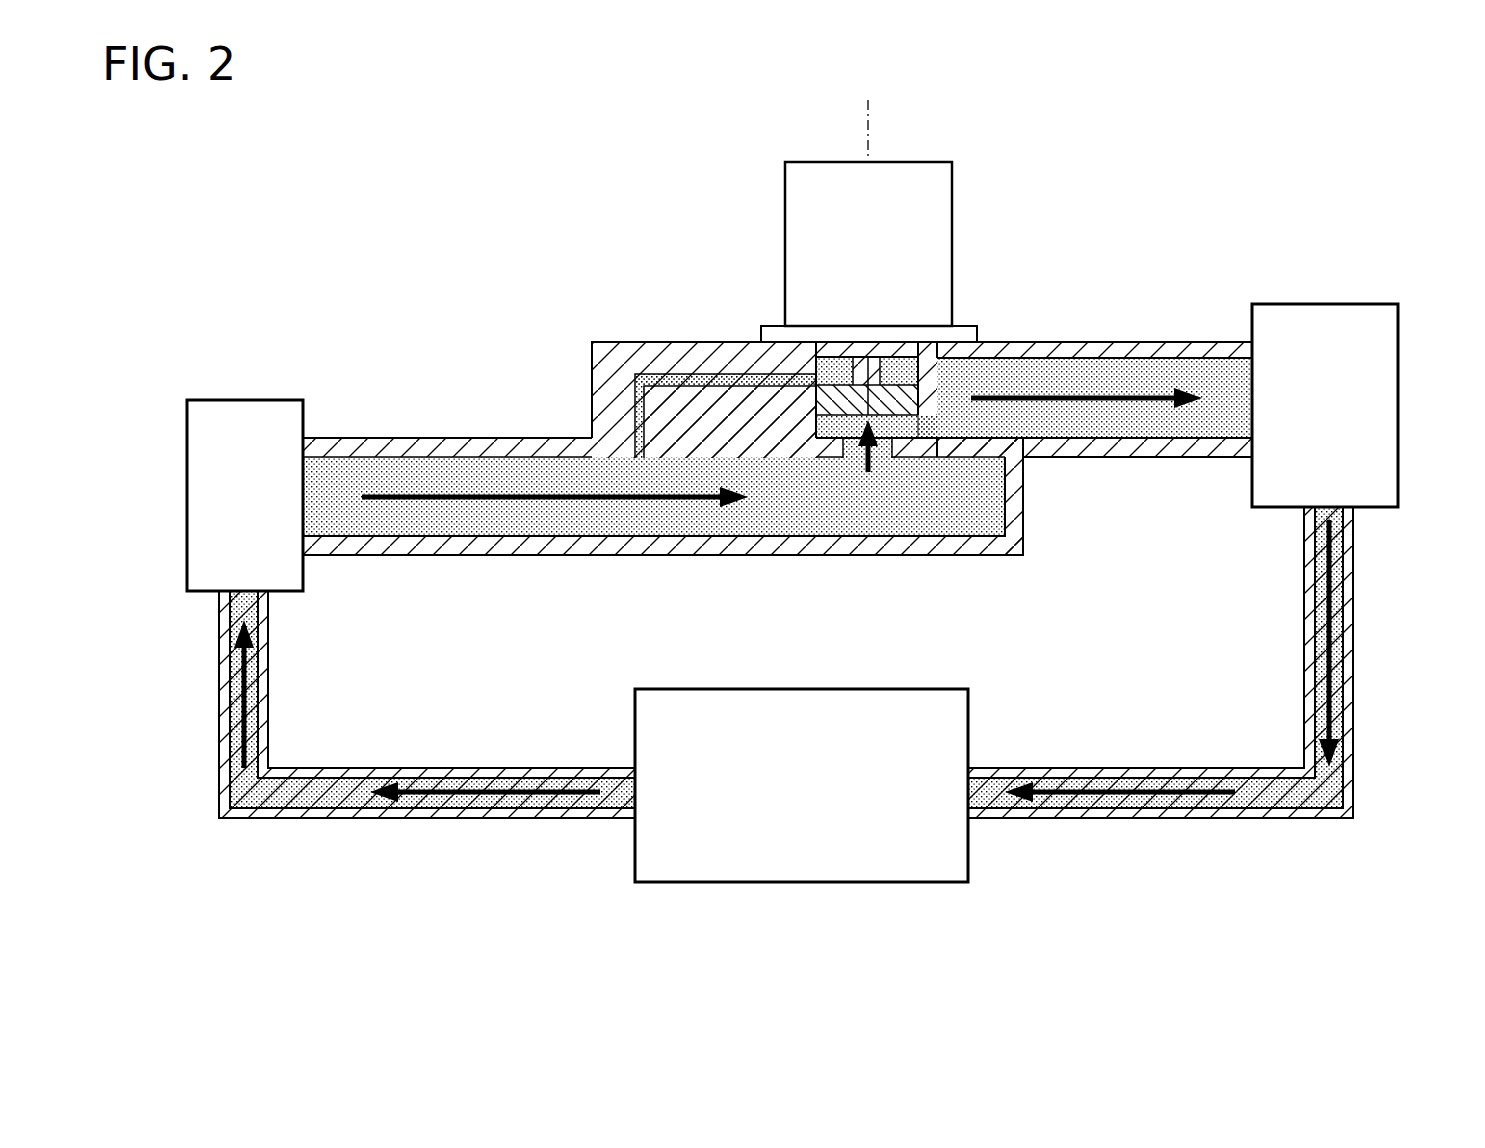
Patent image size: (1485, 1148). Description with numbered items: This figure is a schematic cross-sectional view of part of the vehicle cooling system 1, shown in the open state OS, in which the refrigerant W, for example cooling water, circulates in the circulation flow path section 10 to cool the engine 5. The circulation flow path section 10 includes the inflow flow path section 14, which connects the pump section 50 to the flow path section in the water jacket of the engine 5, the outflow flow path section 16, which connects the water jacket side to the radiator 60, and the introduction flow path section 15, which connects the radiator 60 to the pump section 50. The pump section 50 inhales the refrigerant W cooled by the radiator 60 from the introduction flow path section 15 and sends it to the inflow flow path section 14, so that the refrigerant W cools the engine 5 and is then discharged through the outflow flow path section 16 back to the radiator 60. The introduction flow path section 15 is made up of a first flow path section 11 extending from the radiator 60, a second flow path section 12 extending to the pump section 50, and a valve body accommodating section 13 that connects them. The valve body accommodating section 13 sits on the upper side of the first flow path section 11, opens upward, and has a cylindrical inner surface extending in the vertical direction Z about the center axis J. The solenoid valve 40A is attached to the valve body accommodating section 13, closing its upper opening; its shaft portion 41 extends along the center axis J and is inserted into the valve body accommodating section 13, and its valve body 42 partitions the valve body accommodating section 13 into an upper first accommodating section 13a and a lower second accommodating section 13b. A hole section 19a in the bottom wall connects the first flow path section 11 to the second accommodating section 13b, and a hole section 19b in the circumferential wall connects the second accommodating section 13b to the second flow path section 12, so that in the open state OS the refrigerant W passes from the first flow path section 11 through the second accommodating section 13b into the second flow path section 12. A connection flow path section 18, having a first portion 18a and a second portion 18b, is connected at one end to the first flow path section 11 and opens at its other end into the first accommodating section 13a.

The vehicle cooling system 1 is at (1325, 201).
The engine 5 is at (905, 860).
The circulation flow path section 10 is at (1285, 840).
The first flow path section 11 is at (440, 458).
The second flow path section 12 is at (1078, 370).
The valve body accommodating section 13 is at (931, 356).
The first accommodating section 13a is at (815, 350).
The second accommodating section 13b is at (913, 434).
The inflow flow path section 14 is at (1103, 770).
The introduction flow path section 15 is at (402, 425).
The outflow flow path section 16 is at (315, 770).
The connection flow path section 18 is at (657, 268).
The first portion 18a is at (637, 417).
The second portion 18b is at (663, 378).
The hole section 19a is at (848, 450).
The hole section 19b is at (930, 425).
The solenoid valve 40A is at (960, 192).
The shaft portion 41 is at (880, 368).
The valve body 42 is at (905, 398).
The pump section 50 is at (1375, 398).
The radiator 60 is at (240, 412).
The center axis J is at (870, 138).
The refrigerant W is at (945, 512).
The open state OS is at (348, 215).
The vertical direction Z is at (190, 960).